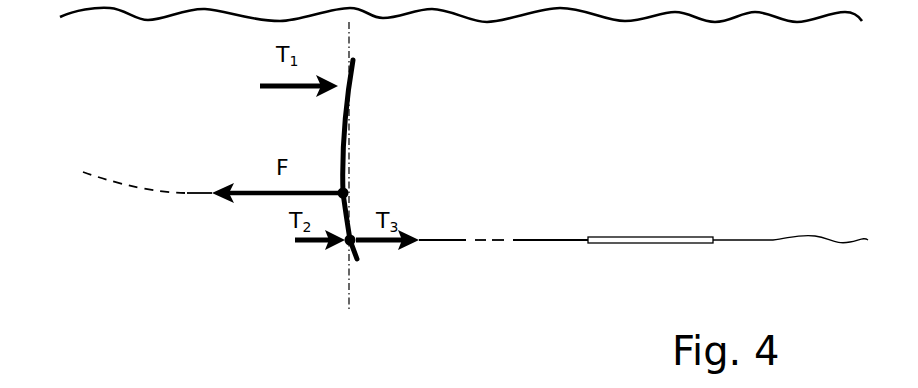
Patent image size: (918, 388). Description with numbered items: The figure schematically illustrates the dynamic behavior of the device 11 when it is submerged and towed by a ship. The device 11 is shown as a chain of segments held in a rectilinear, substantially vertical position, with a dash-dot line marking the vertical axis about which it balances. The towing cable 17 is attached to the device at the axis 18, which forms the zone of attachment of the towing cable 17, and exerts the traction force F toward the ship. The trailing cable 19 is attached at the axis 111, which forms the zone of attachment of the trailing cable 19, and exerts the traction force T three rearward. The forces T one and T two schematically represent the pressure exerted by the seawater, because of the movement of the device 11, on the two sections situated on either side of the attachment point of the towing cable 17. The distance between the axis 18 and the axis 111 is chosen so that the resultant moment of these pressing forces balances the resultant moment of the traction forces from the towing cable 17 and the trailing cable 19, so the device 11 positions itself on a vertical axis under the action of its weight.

The device 11 is at (400, 88).
The towing cable 17 is at (192, 195).
The axis 18 is at (351, 192).
The trailing cable 19 is at (440, 246).
The axis 111 is at (348, 247).